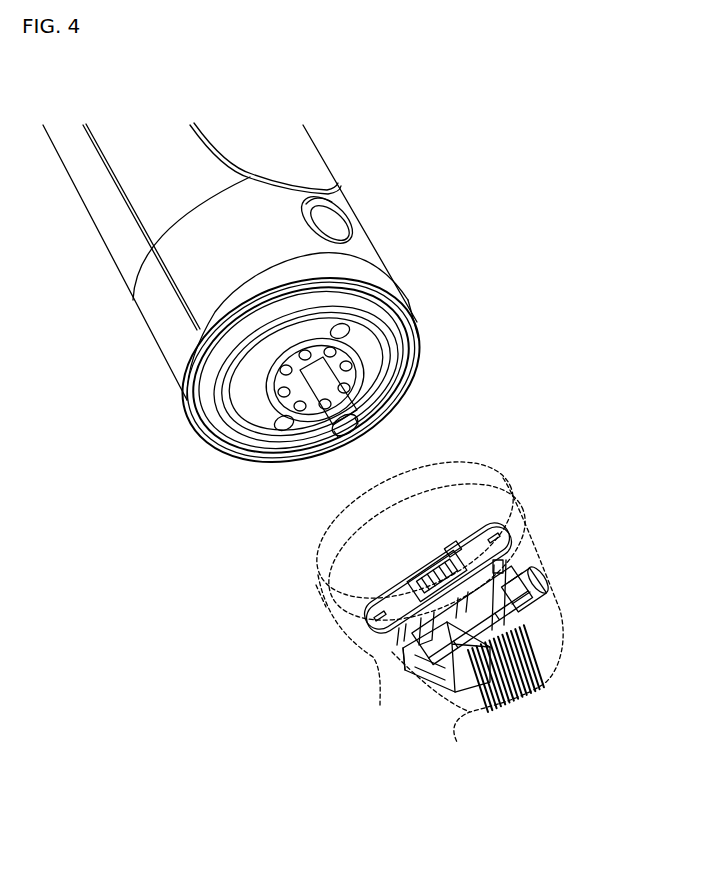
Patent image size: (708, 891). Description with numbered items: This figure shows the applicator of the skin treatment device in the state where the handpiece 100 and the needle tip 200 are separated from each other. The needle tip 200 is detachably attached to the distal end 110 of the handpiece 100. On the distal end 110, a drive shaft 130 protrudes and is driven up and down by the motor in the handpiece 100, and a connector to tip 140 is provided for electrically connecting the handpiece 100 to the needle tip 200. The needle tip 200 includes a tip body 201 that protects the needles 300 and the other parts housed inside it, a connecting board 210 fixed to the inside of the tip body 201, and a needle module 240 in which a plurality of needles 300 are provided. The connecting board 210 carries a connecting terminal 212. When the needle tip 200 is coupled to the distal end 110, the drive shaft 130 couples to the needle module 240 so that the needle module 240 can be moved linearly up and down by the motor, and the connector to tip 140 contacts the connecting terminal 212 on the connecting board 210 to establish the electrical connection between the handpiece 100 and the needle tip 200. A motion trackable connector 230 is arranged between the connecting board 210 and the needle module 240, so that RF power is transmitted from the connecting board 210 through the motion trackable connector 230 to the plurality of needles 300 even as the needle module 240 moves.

The handpiece 100 is at (263, 316).
The distal end 110 is at (265, 408).
The drive shaft 130 is at (311, 424).
The connector to tip 140 is at (345, 353).
The needle tip 200 is at (445, 585).
The tip body 201 is at (517, 483).
The connecting board 210 is at (518, 523).
The connecting terminal 212 is at (455, 545).
The motion trackable connector 230 is at (378, 663).
The needle module 240 is at (520, 608).
The needles 300 is at (453, 697).